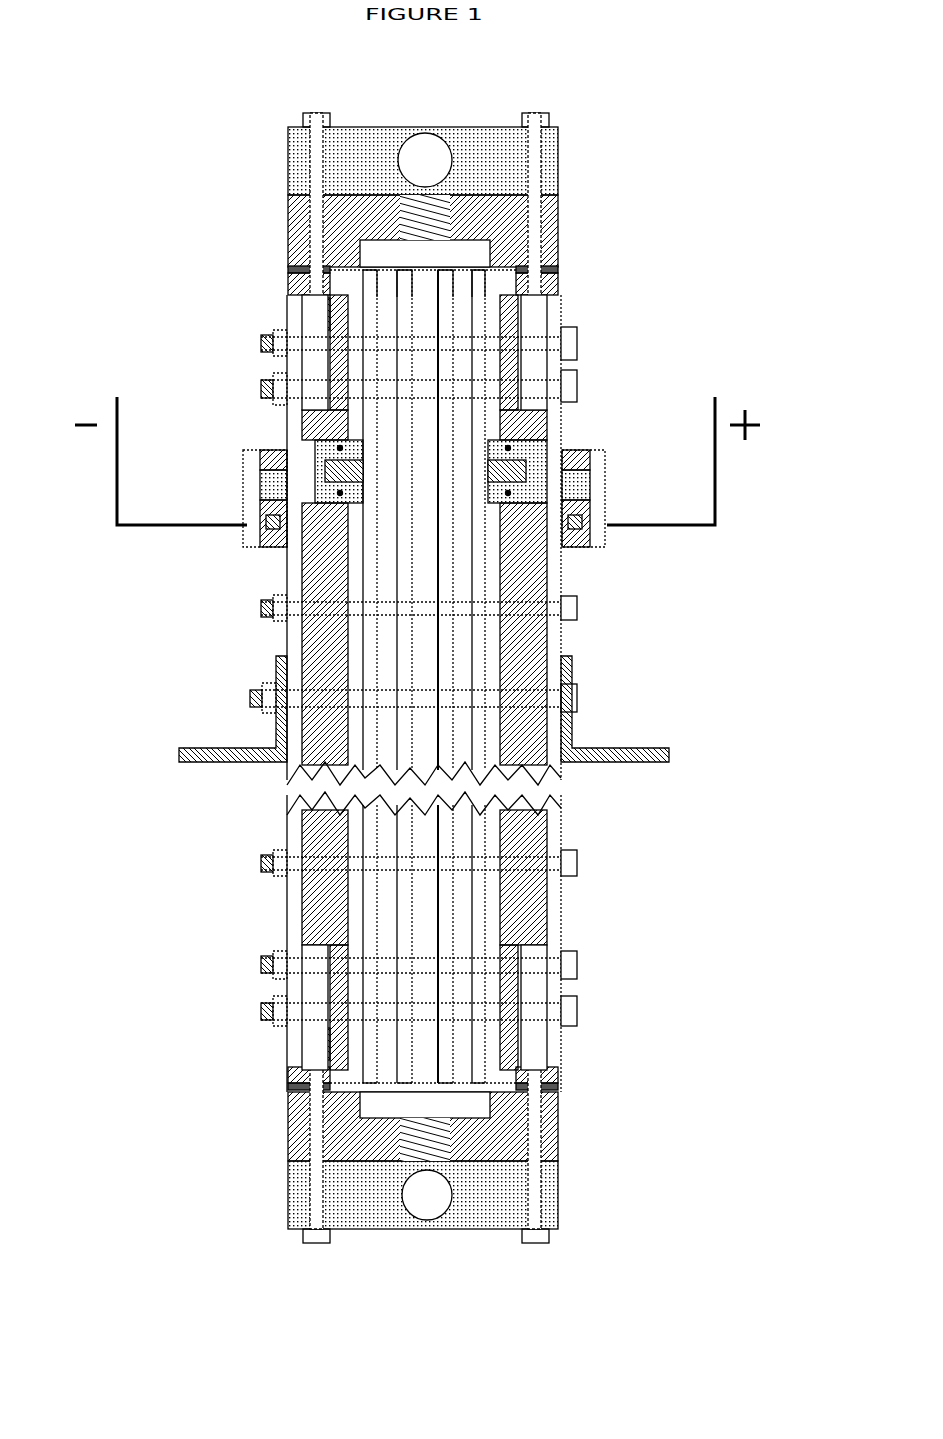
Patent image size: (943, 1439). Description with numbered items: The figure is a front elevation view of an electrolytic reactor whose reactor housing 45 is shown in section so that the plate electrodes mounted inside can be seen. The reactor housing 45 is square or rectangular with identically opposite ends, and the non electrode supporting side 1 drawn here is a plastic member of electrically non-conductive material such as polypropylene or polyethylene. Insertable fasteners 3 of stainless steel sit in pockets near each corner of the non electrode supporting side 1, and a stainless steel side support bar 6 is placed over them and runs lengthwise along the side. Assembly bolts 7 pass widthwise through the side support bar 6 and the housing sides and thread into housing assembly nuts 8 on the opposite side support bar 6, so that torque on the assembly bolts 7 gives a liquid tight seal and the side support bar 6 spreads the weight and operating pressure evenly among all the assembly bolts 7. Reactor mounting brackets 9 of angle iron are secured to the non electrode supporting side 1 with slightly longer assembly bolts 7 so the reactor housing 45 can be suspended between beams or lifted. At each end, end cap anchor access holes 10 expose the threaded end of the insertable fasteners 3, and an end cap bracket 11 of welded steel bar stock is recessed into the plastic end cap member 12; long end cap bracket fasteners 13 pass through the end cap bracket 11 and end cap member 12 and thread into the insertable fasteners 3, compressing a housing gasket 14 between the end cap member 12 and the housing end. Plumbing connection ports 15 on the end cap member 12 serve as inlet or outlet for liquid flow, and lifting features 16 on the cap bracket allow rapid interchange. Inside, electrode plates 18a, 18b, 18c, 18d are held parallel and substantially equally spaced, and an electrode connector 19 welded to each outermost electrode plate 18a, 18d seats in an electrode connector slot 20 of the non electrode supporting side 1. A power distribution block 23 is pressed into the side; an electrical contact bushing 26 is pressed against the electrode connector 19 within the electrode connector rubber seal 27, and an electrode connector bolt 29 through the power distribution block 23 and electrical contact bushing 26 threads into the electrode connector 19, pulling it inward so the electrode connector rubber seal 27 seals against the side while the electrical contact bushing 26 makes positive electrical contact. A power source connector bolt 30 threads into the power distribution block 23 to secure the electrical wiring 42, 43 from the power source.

The non electrode supporting side 1 is at (325, 645).
The insertable fasteners 3 is at (310, 352).
The side support bar 6 is at (562, 645).
The assembly bolts 7 is at (577, 330).
The housing assembly nuts 8 is at (268, 338).
The reactor mounting brackets 9 is at (225, 753).
The end cap anchor access holes 10 is at (298, 285).
The end cap bracket 11 is at (378, 170).
The end cap member 12 is at (300, 217).
The end cap bracket fasteners 13 is at (312, 118).
The housing gasket 14 is at (560, 268).
The plumbing connection ports 15 is at (432, 222).
The lifting features 16 is at (430, 165).
The electrode plate 18a is at (368, 453).
The electrode plate 18b is at (405, 517).
The electrode plate 18c is at (447, 587).
The electrode plate 18d is at (480, 490).
The electrode connector 19 is at (332, 500).
The electrode connector slot 20 is at (345, 316).
The power distribution block 23 is at (278, 452).
The electrical contact bushing 26 is at (340, 448).
The electrode connector rubber seal 27 is at (340, 493).
The electrode connector bolt 29 is at (255, 466).
The power source connector bolt 30 is at (255, 520).
The electrical wiring 42 is at (117, 505).
The electrical wiring 43 is at (717, 478).
The reactor housing 45 is at (712, 264).